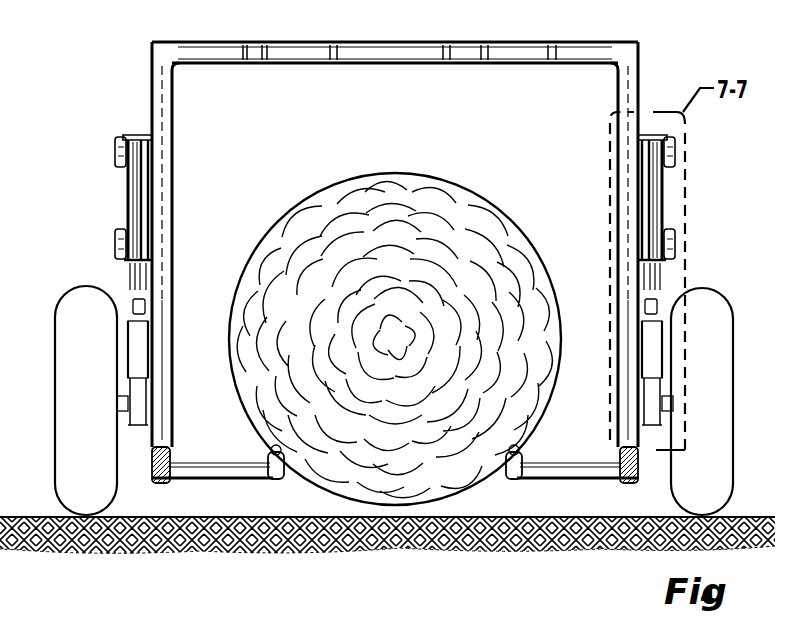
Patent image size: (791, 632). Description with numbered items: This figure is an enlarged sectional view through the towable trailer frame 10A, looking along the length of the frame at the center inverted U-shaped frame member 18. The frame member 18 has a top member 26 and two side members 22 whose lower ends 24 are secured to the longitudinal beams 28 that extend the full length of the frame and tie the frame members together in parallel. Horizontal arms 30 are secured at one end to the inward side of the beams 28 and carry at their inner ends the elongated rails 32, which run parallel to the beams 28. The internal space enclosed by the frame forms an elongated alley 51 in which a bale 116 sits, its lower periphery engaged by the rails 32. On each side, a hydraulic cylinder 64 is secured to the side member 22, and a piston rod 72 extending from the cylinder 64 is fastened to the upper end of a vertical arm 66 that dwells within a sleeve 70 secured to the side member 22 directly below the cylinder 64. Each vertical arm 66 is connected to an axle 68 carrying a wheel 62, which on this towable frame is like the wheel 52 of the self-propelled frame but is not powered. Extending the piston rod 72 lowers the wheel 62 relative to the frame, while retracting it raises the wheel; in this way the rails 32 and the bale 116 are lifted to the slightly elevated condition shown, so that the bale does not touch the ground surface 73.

The towable trailer frame 10A is at (272, 28).
The top member 26 is at (240, 50).
The center inverted U-shaped frame member 18 is at (174, 152).
The side members 22 is at (166, 173).
The elongated alley 51 is at (318, 176).
The first bale 116 is at (382, 338).
The wheels 52 is at (392, 380).
The wheels 62 is at (90, 308).
The hydraulic cylinders 64 is at (136, 232).
The piston rod 72 is at (153, 291).
The sleeve 70 is at (148, 312).
The vertical arms 66 is at (148, 333).
The axles 68 is at (640, 335).
The lower ends 24 is at (170, 418).
The longitudinal beams 28 is at (173, 452).
The arms 30 is at (205, 467).
The elongated rails 32 is at (272, 480).
The ground surface 73 is at (335, 517).